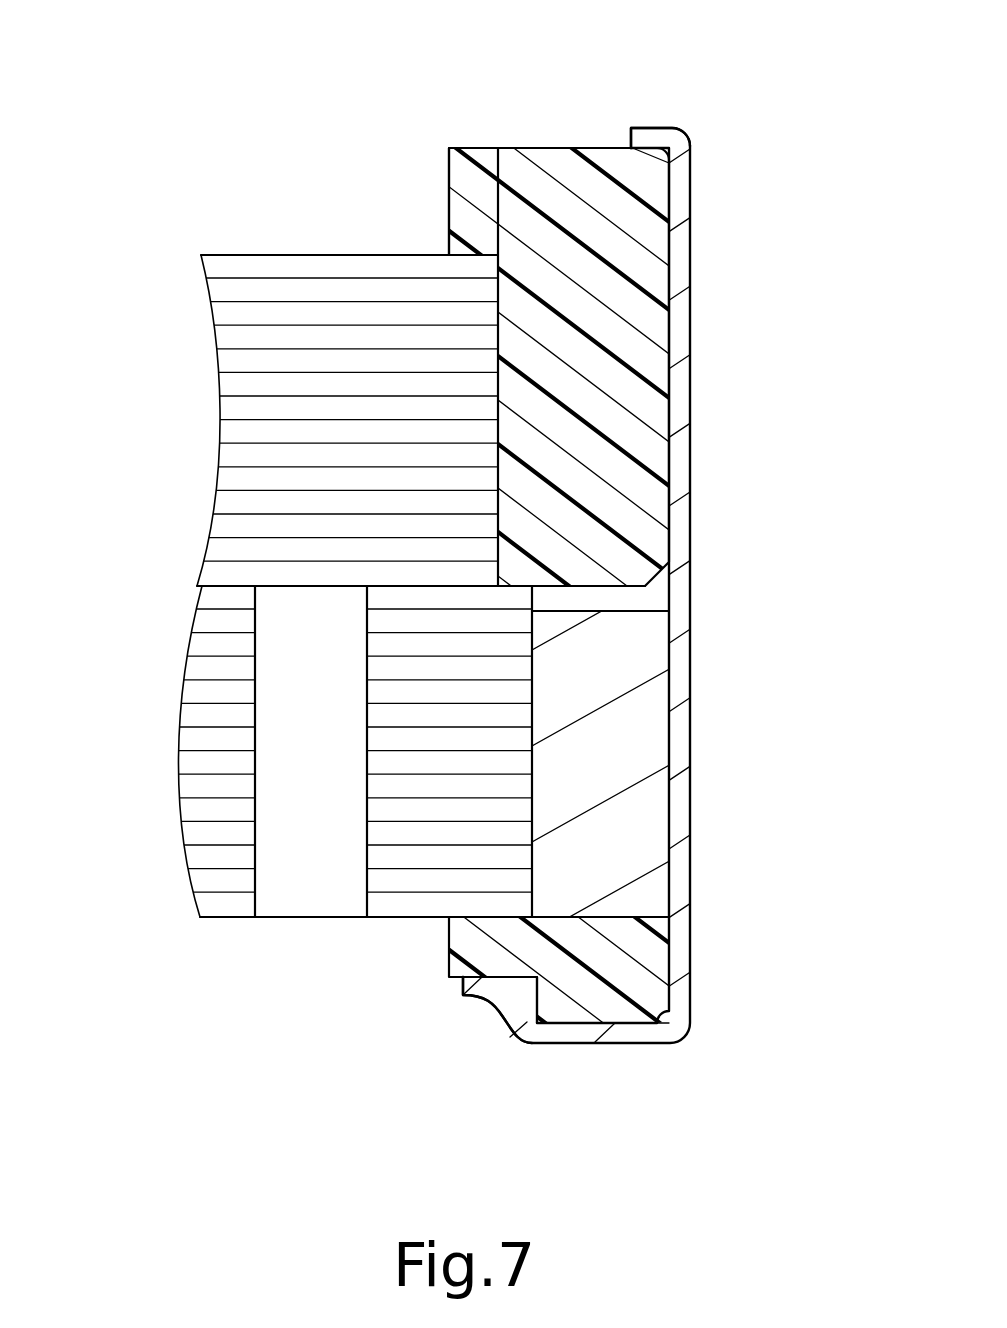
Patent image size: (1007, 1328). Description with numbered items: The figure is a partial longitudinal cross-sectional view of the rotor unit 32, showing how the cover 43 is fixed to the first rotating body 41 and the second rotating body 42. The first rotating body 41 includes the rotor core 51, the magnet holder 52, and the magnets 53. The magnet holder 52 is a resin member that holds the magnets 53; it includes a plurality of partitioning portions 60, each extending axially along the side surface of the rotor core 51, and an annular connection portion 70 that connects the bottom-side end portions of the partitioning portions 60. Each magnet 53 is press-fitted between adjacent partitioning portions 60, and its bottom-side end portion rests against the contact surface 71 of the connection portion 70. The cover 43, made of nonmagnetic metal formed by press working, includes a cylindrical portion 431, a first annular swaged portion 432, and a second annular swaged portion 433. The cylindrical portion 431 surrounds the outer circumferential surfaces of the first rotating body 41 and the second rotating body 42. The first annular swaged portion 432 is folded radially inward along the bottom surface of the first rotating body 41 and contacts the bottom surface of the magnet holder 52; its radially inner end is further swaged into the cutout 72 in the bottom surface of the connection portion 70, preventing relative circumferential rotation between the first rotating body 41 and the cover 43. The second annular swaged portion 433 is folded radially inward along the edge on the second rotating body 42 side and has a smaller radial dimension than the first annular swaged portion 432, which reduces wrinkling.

The rotor unit 32 is at (312, 115).
The first rotating body 41 is at (160, 850).
The second rotating body 42 is at (381, 599).
The cover 43 is at (622, 598).
The rotor core 51 is at (302, 337).
The magnet holder 52 is at (572, 73).
The magnet 53 is at (617, 745).
The partitioning portion 60 is at (562, 383).
The connection portion 70 is at (470, 212).
The contact surface 71 is at (632, 917).
The cutout 72 is at (527, 983).
The cylindrical portion 431 is at (680, 530).
The first annular swaged portion 432 is at (570, 1033).
The second annular swaged portion 433 is at (650, 128).